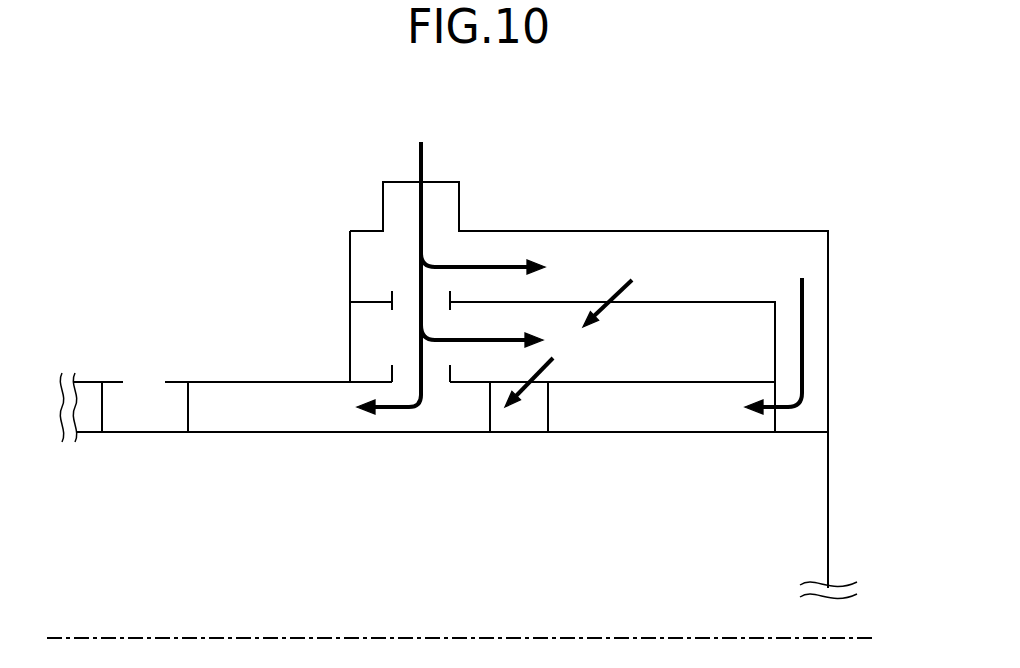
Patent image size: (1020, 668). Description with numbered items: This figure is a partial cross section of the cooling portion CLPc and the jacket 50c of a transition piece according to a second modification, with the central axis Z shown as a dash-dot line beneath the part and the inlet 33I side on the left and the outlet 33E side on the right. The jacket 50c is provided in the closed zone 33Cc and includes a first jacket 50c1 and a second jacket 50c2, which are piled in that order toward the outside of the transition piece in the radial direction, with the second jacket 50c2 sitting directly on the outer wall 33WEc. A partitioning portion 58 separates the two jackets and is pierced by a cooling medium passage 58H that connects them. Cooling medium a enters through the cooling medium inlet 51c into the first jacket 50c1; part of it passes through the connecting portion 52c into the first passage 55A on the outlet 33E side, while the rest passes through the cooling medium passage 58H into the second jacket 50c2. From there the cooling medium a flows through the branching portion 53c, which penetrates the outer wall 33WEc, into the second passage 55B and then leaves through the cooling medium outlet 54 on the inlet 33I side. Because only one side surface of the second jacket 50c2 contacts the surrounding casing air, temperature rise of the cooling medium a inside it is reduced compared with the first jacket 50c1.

The closed zone 33Cc is at (206, 145).
The inlet 33I is at (68, 538).
The outlet 33E is at (841, 485).
The outer wall 33WEc is at (238, 382).
The jacket 50c is at (841, 213).
The first jacket 50c1 is at (678, 255).
The second jacket 50c2 is at (558, 318).
The cooling medium inlet 51c is at (452, 192).
The connecting portion 52c is at (817, 405).
The branching portion 53c is at (402, 370).
The cooling medium outlet 54 is at (144, 374).
The first passage 55A is at (653, 417).
The second passage 55B is at (292, 415).
The partitioning portion 58 is at (732, 300).
The cooling medium passage 58H is at (402, 295).
The cooling medium a is at (579, 263).
The cooling portion CLPc is at (447, 464).
The central axis Z is at (476, 640).